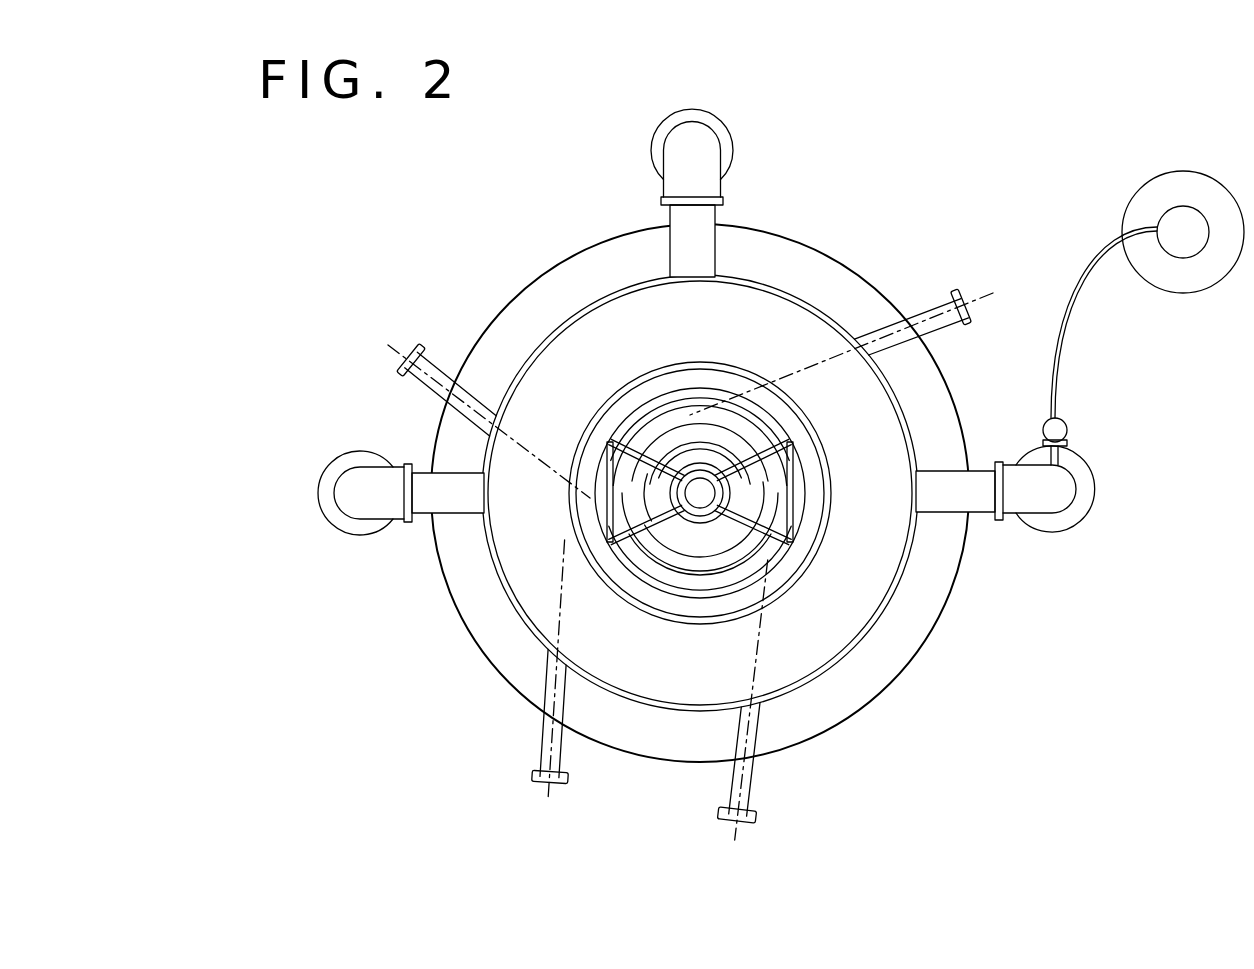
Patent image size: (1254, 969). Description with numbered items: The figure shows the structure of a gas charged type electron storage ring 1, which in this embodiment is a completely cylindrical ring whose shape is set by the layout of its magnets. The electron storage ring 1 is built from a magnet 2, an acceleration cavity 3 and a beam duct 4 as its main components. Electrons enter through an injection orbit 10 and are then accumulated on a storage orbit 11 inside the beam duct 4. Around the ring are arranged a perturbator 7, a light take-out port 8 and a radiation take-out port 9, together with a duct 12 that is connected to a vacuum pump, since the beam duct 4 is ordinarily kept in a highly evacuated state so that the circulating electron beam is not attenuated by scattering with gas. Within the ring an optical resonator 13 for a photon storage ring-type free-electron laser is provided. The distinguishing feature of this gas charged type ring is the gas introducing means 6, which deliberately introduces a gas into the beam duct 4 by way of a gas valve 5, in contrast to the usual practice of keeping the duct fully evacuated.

The electron storage ring 1 is at (810, 163).
The magnet 2 is at (812, 253).
The acceleration cavity 3 is at (790, 538).
The beam duct 4 is at (768, 547).
The gas valve 5 is at (1068, 428).
The gas introducing means 6 is at (1157, 183).
The perturbator 7 is at (603, 445).
The light take-out port 8 is at (430, 384).
The radiation take-out port 9 is at (937, 300).
The injection orbit 10 is at (543, 705).
The storage orbit 11 is at (678, 568).
The duct connected to a vacuum pump 12 is at (726, 120).
The optical resonator 13 is at (832, 509).